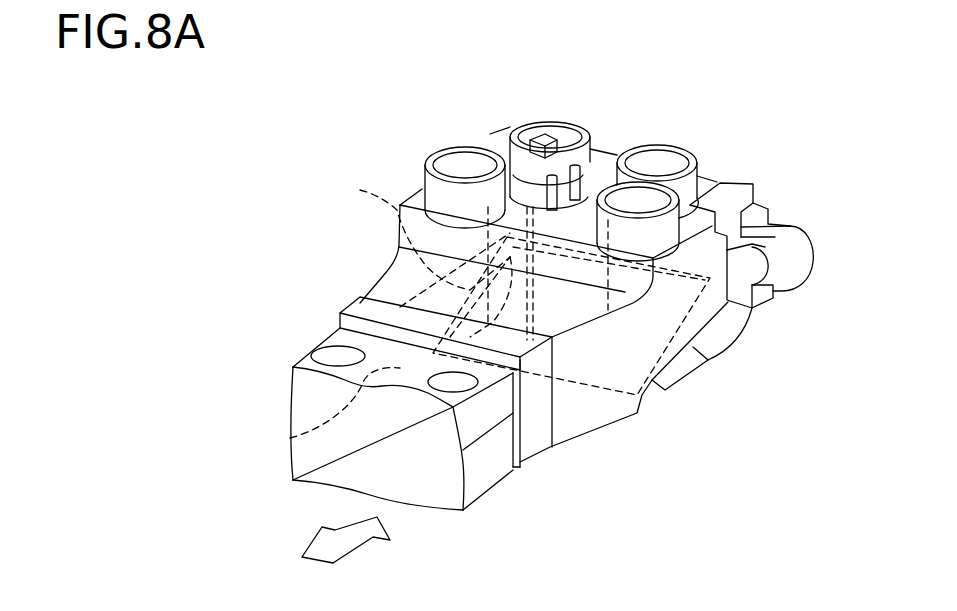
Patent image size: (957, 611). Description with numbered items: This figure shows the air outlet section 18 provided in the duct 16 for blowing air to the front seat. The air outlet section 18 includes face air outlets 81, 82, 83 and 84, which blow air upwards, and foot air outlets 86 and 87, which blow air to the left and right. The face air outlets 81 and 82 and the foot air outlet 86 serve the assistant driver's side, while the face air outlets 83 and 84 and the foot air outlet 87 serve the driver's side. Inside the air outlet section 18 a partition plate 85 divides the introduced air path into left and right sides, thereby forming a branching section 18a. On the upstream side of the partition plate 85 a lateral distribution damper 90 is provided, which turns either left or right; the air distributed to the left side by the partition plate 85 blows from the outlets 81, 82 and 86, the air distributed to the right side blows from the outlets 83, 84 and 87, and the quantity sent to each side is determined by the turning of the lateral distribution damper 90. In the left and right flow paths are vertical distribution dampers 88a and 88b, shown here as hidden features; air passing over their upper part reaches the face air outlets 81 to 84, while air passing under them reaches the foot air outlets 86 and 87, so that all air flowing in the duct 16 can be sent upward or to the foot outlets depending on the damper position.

The duct 16 is at (487, 490).
The air outlet section 18 is at (538, 246).
The branching section 18a is at (402, 278).
The face air outlet 81 is at (445, 150).
The face air outlet 82 is at (542, 122).
The face air outlet 83 is at (657, 145).
The face air outlet 84 is at (693, 200).
The partition plate 85 is at (600, 140).
The foot air outlet 86 is at (343, 313).
The foot air outlet 87 is at (708, 360).
The vertical distribution damper 88a is at (398, 212).
The vertical distribution damper 88b is at (583, 387).
The lateral distribution damper 90 is at (353, 400).